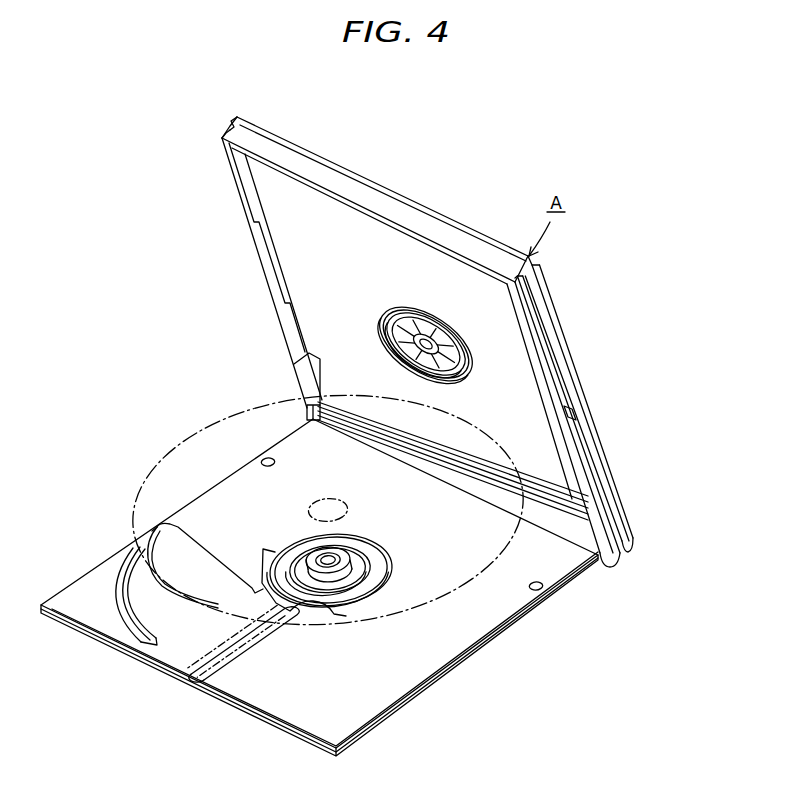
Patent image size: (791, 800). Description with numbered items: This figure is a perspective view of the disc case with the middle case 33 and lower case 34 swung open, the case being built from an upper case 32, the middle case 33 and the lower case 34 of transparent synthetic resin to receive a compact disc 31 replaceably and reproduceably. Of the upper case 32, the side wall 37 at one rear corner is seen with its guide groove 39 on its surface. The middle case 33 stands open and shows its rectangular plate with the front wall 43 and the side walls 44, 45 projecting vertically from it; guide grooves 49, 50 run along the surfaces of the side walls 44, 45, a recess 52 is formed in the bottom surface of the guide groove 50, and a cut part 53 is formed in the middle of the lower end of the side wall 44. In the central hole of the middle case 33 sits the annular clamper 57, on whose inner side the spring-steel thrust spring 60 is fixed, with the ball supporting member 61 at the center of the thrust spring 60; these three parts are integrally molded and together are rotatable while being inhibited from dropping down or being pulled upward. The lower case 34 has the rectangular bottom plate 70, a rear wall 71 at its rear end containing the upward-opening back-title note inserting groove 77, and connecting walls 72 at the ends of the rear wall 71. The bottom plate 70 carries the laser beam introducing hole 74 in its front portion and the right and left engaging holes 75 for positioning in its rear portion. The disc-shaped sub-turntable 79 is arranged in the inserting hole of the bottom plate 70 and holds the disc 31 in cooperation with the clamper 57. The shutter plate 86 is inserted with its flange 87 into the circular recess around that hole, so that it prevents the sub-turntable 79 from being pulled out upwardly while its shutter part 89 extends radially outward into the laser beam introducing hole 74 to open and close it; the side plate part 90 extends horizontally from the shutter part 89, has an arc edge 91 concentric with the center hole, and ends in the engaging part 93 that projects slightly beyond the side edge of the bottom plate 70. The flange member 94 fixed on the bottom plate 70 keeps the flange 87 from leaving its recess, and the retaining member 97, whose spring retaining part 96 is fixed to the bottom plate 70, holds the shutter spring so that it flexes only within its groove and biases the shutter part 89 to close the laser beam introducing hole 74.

The disc 31 is at (259, 410).
The upper case 32 is at (421, 204).
The middle case 33 is at (266, 195).
The lower case 34 is at (540, 614).
The side wall 37 is at (632, 540).
The guide groove 39 is at (618, 564).
The front wall 43 is at (337, 180).
The side wall 44 is at (220, 148).
The side wall 45 is at (548, 359).
The guide groove 49 is at (228, 124).
The guide groove 50 is at (530, 294).
The recess 52 is at (577, 414).
The cut part 53 is at (263, 263).
The clamper 57 is at (465, 380).
The thrust spring 60 is at (433, 334).
The ball supporting member 61 is at (421, 333).
The bottom plate 70 is at (440, 665).
The rear wall 71 is at (453, 468).
The connecting wall 72 is at (315, 421).
The laser beam introducing hole 74 is at (258, 642).
The engaging hole 75 is at (259, 461).
The back-title note inserting groove 77 is at (478, 466).
The sub-turntable 79 is at (354, 566).
The shutter plate 86 is at (176, 658).
The flange 87 is at (266, 556).
The shutter part 89 is at (193, 672).
The side plate part 90 is at (180, 562).
The arc edge 91 is at (132, 557).
The engaging part 93 is at (155, 521).
The flange member 94 is at (393, 570).
The spring retaining part 96 is at (130, 623).
The retaining member 97 is at (88, 613).